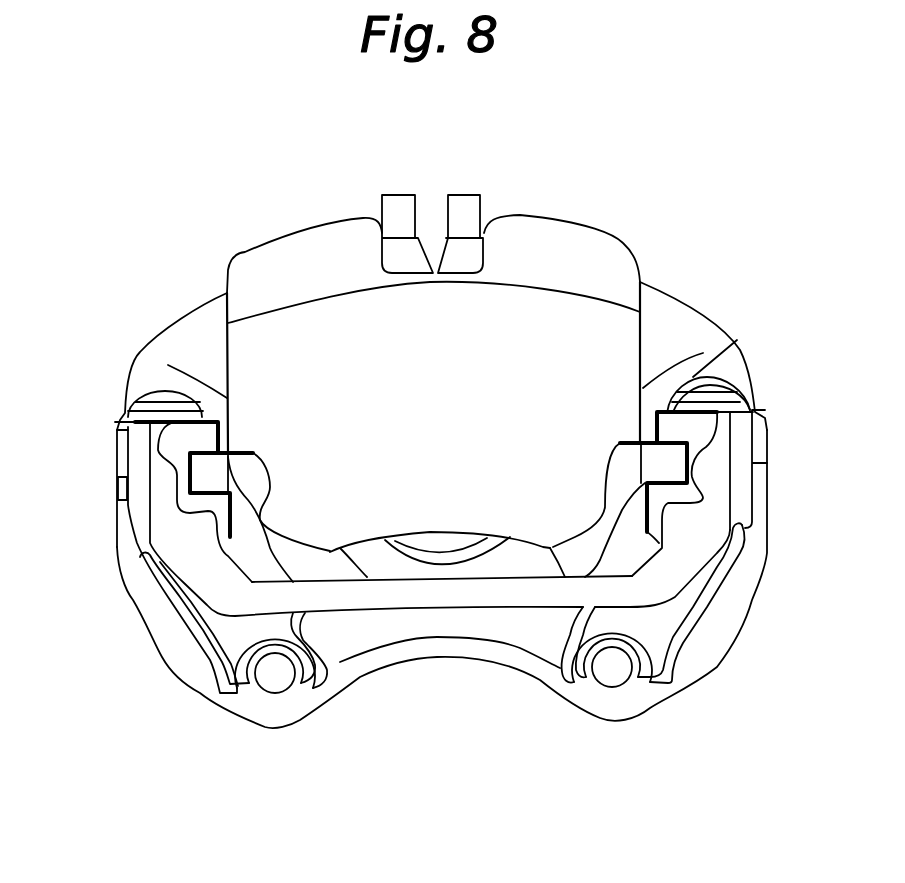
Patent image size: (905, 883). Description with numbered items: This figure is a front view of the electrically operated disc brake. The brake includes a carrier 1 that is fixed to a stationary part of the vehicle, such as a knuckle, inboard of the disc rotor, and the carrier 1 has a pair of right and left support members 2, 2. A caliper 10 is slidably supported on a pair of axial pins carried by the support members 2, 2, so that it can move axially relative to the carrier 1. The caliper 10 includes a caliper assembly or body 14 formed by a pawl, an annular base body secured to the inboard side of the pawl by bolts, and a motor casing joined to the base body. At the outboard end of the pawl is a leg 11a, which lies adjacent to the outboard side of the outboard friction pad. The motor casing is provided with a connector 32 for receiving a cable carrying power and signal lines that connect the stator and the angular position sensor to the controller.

The carrier 1 is at (160, 657).
The support member 2 is at (703, 378).
The caliper 10 is at (625, 240).
The leg 11a is at (390, 492).
The caliper assembly or body 14 is at (240, 255).
The connector 32 is at (398, 207).